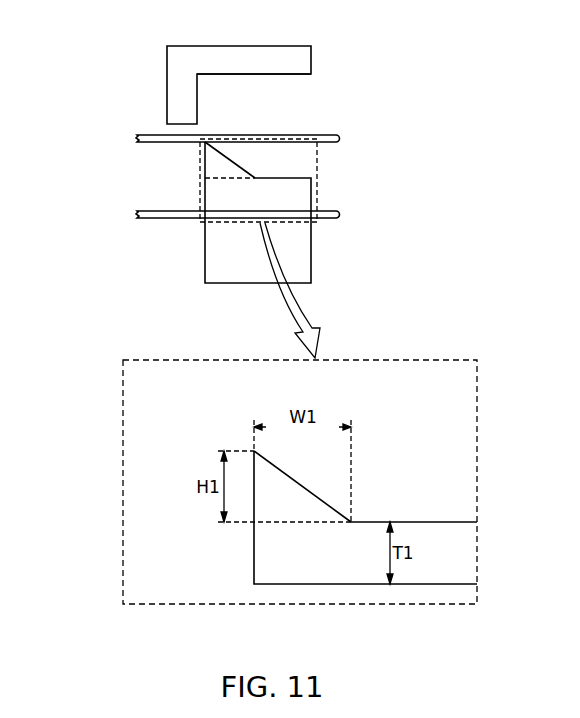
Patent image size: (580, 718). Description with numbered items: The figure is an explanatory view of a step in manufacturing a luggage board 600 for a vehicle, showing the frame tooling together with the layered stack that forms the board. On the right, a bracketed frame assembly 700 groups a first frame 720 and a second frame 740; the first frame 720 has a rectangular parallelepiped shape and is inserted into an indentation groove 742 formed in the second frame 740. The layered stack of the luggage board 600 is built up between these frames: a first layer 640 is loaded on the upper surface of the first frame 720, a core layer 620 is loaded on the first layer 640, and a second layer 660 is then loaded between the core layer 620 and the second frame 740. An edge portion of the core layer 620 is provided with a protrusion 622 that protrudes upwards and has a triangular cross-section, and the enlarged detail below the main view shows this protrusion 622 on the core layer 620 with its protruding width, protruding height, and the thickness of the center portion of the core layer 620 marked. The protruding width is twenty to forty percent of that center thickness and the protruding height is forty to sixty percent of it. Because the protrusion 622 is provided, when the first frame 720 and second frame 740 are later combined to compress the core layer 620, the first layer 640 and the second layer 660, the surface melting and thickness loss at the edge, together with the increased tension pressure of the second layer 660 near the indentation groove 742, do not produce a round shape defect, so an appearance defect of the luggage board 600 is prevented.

The luggage board 600 is at (55, 128).
The core layer 620 is at (280, 197).
The protrusion 622 is at (212, 165).
The first layer 640 is at (148, 214).
The second layer 660 is at (148, 138).
The welding / pressing jig assembly 700 is at (410, 58).
The first frame 720 is at (302, 246).
The second frame 740 is at (302, 60).
The indentation groove 742 is at (229, 99).